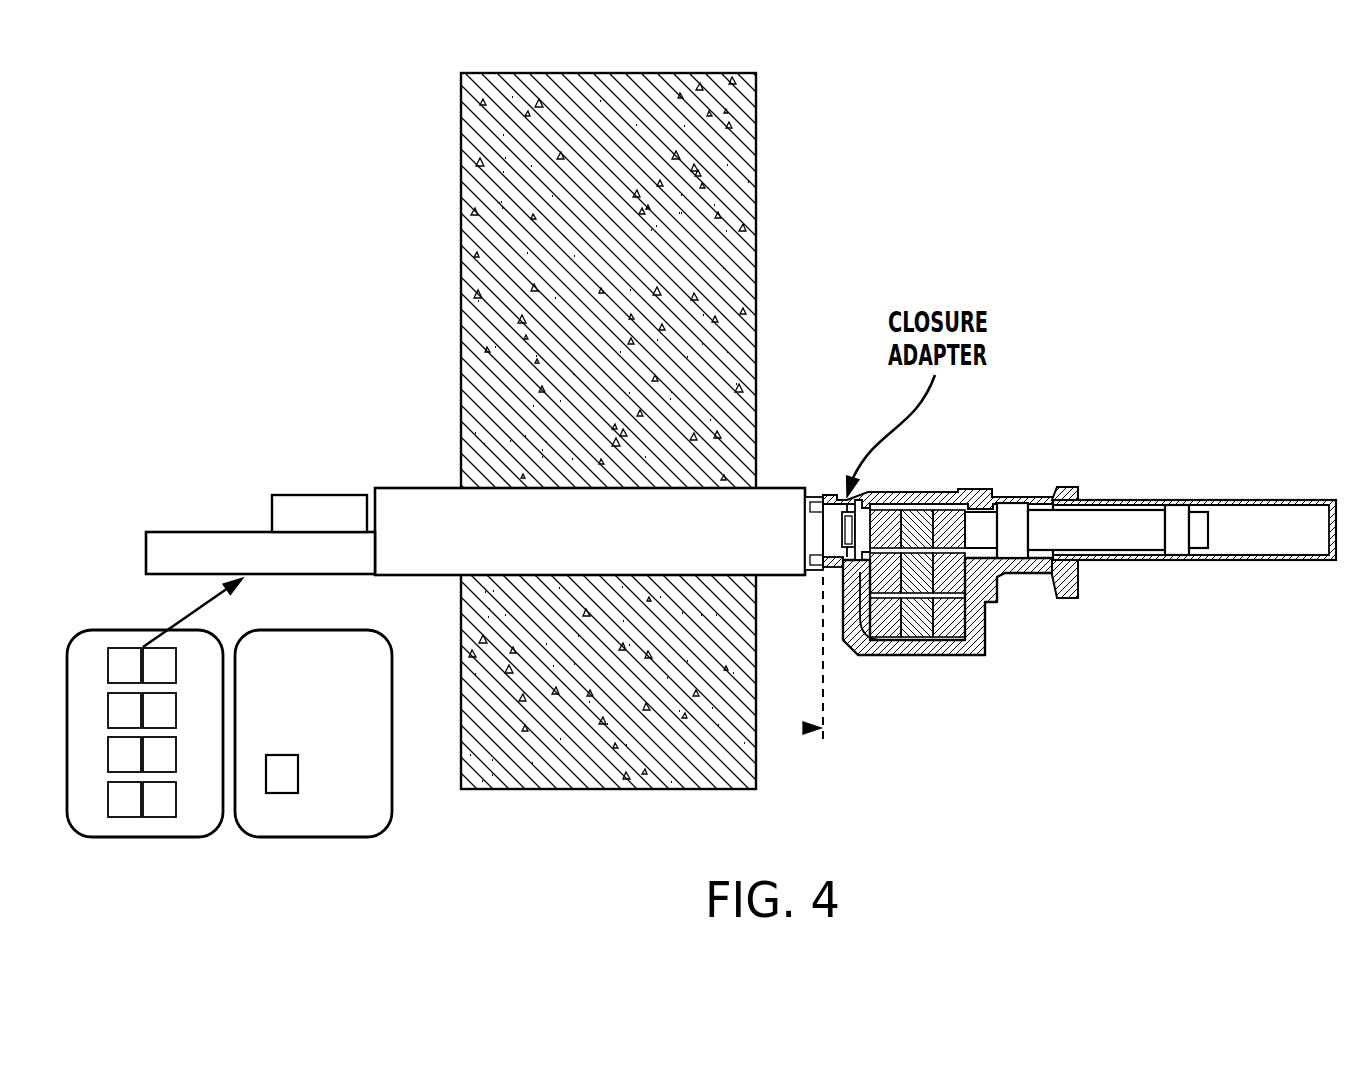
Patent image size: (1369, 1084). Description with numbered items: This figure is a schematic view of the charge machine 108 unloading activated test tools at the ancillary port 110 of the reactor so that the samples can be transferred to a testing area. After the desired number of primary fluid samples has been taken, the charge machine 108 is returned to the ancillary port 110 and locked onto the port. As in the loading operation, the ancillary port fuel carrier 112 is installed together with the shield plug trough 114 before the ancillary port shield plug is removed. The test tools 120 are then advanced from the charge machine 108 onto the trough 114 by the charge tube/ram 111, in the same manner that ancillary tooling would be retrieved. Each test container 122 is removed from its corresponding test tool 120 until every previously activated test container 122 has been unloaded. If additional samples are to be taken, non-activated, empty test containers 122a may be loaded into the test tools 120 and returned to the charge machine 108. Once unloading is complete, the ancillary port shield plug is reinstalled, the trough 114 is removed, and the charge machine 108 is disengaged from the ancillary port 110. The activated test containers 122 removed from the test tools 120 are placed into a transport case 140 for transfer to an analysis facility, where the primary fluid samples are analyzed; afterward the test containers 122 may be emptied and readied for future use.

The charge machine 108 is at (1102, 292).
The ancillary port 110 is at (785, 460).
The charge tube/ram 111 is at (1140, 488).
The ancillary port fuel carrier 112 is at (413, 455).
The shield plug trough 114 is at (153, 499).
The test tool 120 is at (299, 459).
The test container 122 is at (922, 527).
The non-activated, empty test container 122a is at (125, 817).
The transport case 140 is at (375, 809).